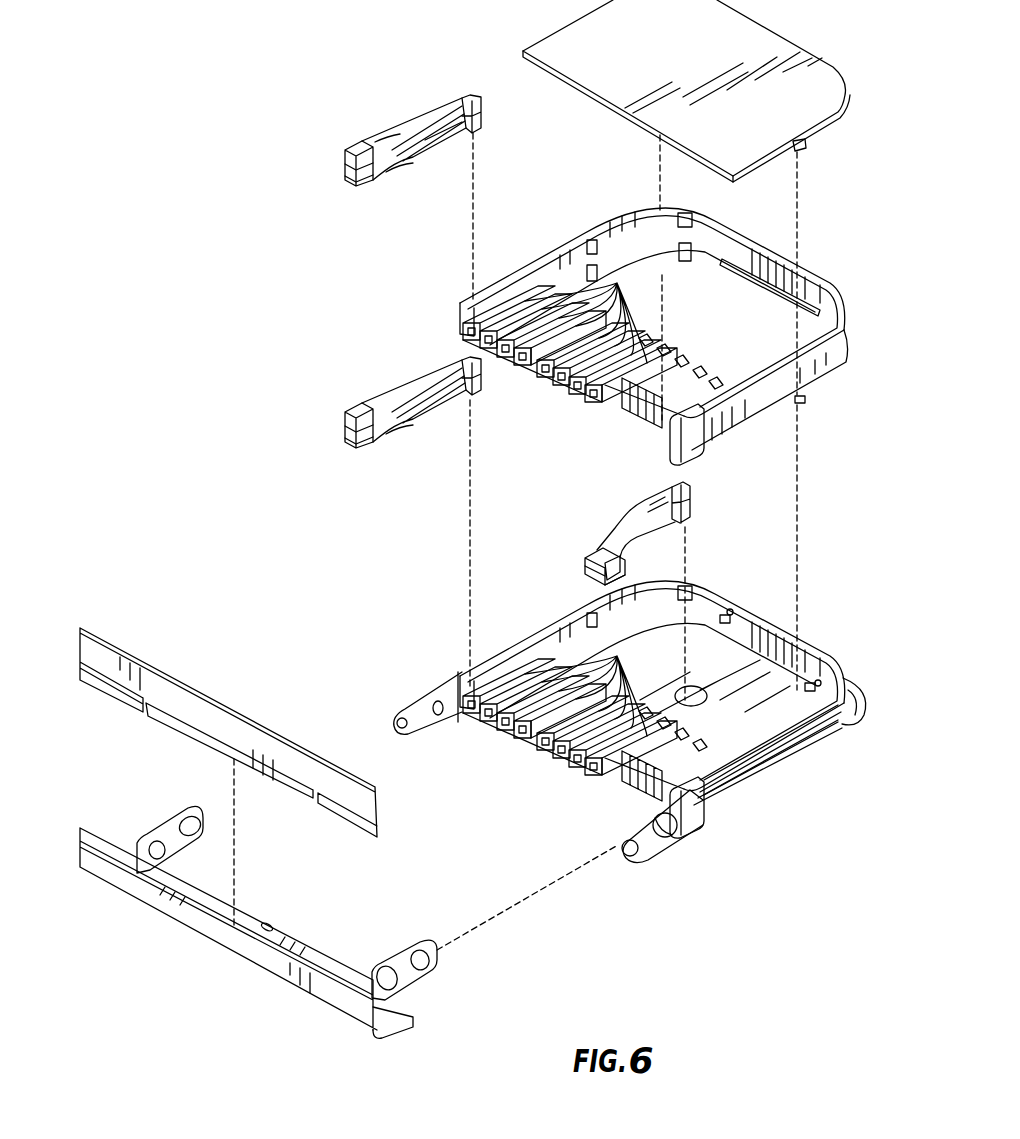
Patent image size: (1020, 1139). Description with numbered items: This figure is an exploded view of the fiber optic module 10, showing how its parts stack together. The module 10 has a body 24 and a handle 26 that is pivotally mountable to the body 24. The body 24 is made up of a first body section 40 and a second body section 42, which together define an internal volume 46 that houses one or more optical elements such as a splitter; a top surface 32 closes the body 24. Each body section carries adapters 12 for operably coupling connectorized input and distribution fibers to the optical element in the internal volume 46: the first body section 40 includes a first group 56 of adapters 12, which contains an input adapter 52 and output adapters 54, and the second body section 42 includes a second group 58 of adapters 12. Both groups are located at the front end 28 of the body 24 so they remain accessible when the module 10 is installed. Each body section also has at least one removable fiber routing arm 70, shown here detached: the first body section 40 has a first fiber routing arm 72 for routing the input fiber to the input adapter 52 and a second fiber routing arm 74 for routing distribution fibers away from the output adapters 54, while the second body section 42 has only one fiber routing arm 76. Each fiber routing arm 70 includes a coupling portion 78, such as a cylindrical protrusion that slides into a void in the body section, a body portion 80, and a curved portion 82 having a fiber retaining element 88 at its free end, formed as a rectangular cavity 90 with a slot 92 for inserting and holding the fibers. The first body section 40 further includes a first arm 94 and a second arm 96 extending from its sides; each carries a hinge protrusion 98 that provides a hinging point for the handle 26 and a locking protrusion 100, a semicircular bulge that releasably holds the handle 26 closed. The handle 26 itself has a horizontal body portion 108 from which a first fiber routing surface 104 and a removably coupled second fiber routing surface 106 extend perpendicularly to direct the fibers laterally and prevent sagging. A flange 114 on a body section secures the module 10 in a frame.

The fiber optic module 10 is at (214, 86).
The adapters 12 is at (628, 404).
The body 24 is at (866, 870).
The handle 26 is at (80, 617).
The front end 28 is at (606, 816).
The top surface 32 is at (667, 54).
The first body section 40 is at (776, 630).
The second body section 42 is at (767, 252).
The internal volume 46 is at (723, 657).
The input adapter 52 is at (702, 746).
The output adapters 54 is at (619, 284).
The first group of adapters 56 is at (745, 770).
The second group of adapters 58 is at (680, 356).
The fiber routing arm 70 is at (416, 128).
The first fiber routing arm 72 is at (637, 538).
The second fiber routing arm 74 is at (418, 428).
The fiber routing arm 76 is at (410, 166).
The coupling portion 78 is at (470, 98).
The body portion 80 is at (442, 120).
The curved portion 82 is at (380, 140).
The fiber retaining element 88 is at (349, 146).
The rectangular cavity 90 is at (362, 184).
The slot 92 is at (345, 165).
The first arm 94 is at (440, 690).
The second arm 96 is at (654, 846).
The hinge protrusion 98 is at (679, 830).
The locking protrusion 100 is at (636, 856).
The first fiber routing surface 104 is at (390, 1032).
The second fiber routing surface 106 is at (380, 806).
The horizontal body portion 108 is at (398, 1013).
The flange 114 is at (826, 745).